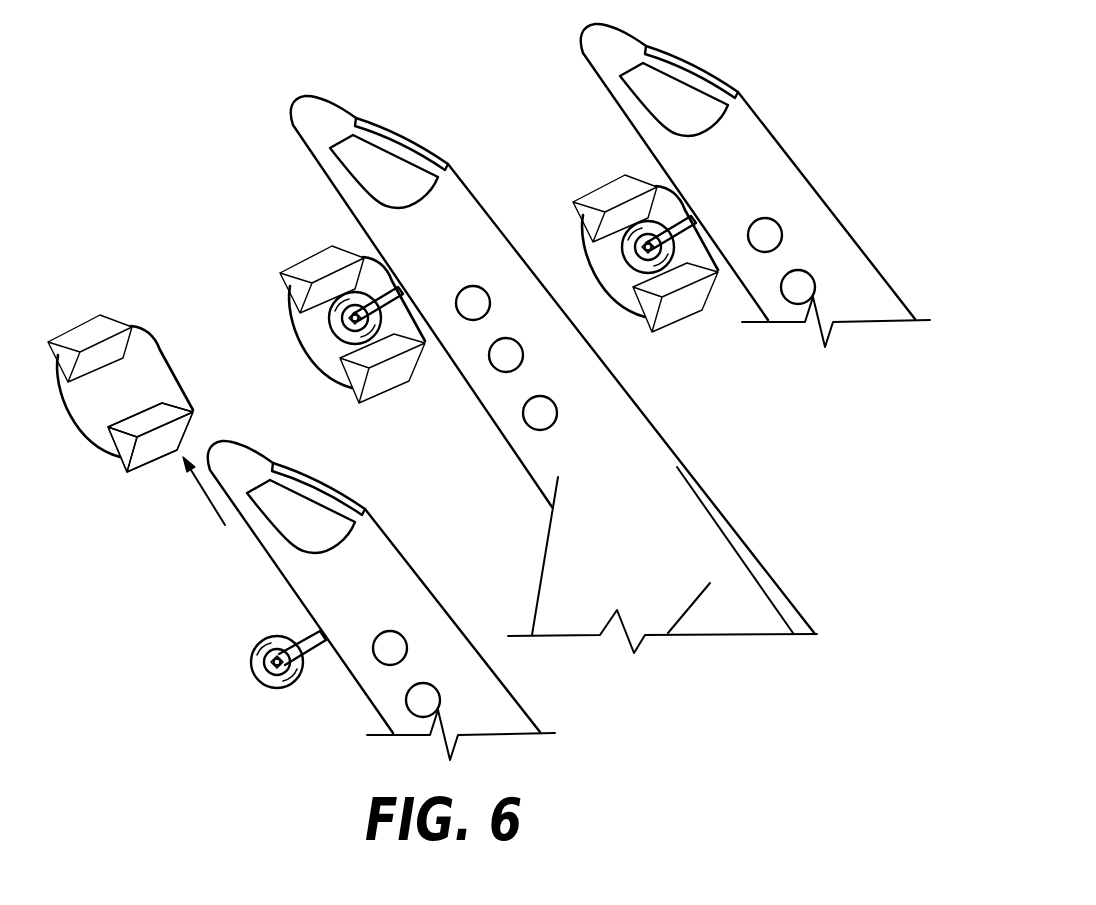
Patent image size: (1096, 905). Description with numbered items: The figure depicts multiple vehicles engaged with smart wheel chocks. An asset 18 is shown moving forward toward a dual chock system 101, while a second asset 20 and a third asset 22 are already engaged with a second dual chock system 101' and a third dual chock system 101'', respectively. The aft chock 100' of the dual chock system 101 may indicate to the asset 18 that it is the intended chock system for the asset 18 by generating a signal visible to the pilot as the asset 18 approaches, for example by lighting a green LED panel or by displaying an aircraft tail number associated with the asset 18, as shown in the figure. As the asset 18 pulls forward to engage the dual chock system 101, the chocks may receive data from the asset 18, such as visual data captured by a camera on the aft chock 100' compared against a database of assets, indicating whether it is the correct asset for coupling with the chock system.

The asset 18 is at (388, 528).
The second asset 20 is at (482, 208).
The third asset 22 is at (632, 126).
The aft chock 100' is at (184, 437).
The dual chock system 101 is at (120, 318).
The second dual chock system 101' is at (320, 283).
The third dual chock system 101'' is at (679, 297).